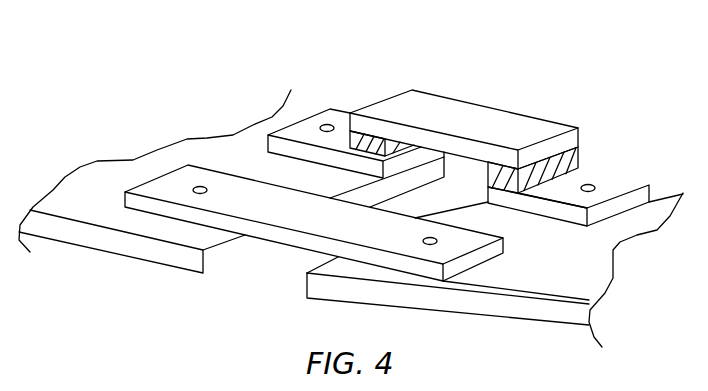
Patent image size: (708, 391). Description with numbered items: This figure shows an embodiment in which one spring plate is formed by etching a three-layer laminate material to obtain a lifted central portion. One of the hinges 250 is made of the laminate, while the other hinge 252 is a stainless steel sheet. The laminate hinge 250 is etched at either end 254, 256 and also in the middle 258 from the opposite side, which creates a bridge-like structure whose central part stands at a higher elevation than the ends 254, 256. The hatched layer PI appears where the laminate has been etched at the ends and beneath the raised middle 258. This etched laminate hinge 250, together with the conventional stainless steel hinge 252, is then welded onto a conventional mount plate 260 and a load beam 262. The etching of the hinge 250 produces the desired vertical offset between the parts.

The hinge 250 is at (351, 215).
The hinge 252 is at (272, 233).
The end 254 is at (290, 133).
The end 256 is at (603, 210).
The middle 258 is at (482, 118).
The polyimide layer PI is at (578, 158).
The mount plate 260 is at (124, 245).
The load beam 262 is at (521, 309).